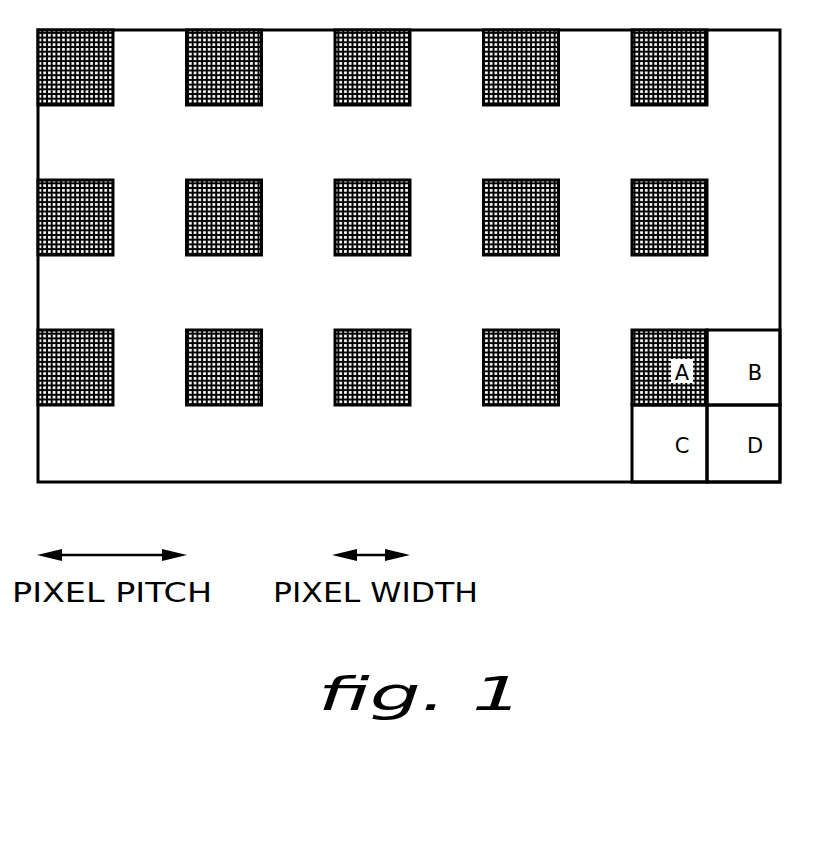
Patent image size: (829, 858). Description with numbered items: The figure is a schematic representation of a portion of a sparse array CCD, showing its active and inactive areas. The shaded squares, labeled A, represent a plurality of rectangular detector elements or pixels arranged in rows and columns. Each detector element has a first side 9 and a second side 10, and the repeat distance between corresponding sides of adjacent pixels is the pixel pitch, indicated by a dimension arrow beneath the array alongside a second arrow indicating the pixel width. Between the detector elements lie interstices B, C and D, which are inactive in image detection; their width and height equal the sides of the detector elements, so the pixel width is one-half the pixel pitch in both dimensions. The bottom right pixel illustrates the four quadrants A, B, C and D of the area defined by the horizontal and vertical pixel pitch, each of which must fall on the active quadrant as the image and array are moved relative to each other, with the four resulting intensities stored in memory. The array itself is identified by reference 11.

The first side 9 is at (513, 330).
The second side 10 is at (558, 360).
The CCD array 11 is at (418, 308).